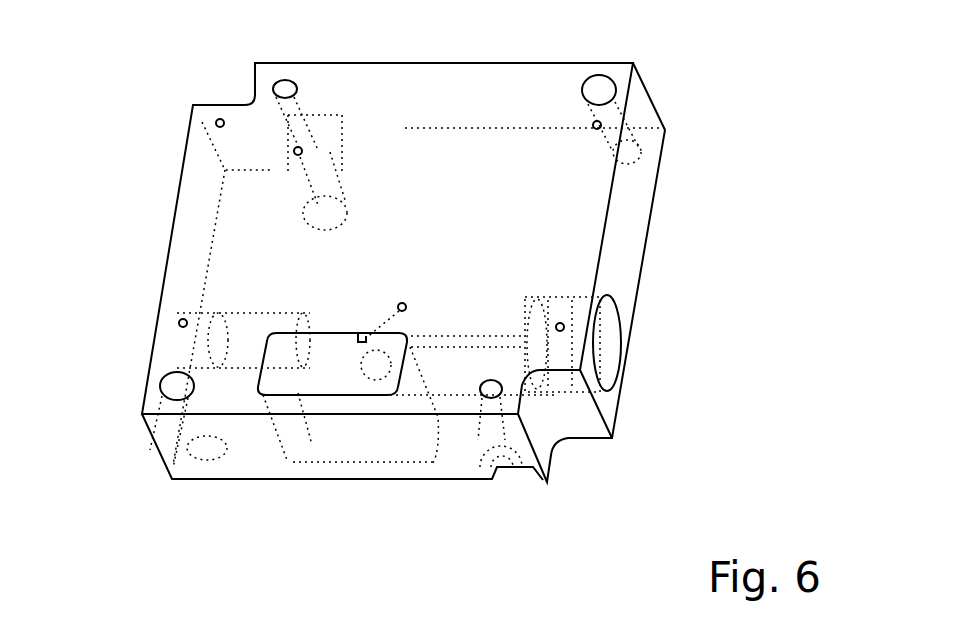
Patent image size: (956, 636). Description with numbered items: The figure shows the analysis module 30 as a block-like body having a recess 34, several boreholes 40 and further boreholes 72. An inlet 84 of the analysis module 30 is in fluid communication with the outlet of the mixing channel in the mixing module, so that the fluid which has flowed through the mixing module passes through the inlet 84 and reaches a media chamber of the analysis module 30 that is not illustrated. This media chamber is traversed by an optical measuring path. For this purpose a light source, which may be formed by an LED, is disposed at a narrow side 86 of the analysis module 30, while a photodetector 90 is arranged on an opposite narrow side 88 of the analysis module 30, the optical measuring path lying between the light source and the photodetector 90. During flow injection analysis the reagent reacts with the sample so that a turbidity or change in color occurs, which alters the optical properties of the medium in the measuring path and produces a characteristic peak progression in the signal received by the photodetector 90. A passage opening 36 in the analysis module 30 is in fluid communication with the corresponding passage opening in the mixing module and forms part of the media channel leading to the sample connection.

The analysis module 30 is at (459, 272).
The recess 34 is at (337, 388).
The passage opening 36 is at (301, 150).
The boreholes 40 is at (283, 81).
The boreholes 72 is at (216, 123).
The inlet 84 is at (407, 306).
The narrow side 86 is at (176, 252).
The opposite narrow side 88 is at (627, 246).
The photodetector 90 is at (612, 344).